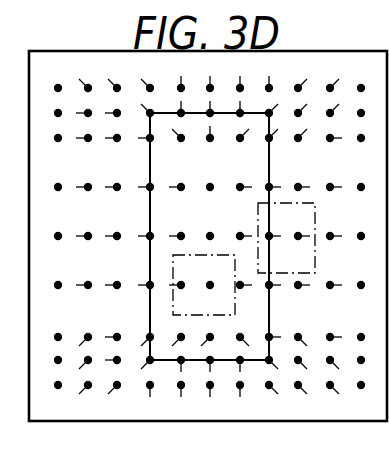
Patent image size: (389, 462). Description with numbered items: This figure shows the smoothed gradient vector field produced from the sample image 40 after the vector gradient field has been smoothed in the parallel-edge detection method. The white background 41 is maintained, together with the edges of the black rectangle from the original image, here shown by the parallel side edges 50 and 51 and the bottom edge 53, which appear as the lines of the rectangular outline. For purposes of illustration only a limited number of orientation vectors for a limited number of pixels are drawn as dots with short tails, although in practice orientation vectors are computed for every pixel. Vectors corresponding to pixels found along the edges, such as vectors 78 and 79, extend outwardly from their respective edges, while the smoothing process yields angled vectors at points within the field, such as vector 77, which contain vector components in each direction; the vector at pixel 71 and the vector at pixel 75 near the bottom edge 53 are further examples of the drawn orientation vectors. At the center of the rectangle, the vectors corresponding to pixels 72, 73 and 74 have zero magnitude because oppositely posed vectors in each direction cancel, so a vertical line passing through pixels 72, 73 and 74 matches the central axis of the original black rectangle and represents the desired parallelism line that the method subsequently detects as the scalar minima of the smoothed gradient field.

The image 40 is at (72, 42).
The white background 41 is at (369, 229).
The side edge 50 is at (269, 165).
The side edge 51 is at (150, 165).
The bottom edge 53 is at (193, 362).
The test probe 71 is at (210, 337).
The pixel 72 is at (205, 215).
The pixel 73 is at (210, 187).
The pixel 74 is at (210, 285).
The test probe 75 is at (210, 362).
The vector 77 is at (150, 360).
The vector 78 is at (269, 285).
The vector 79 is at (150, 236).